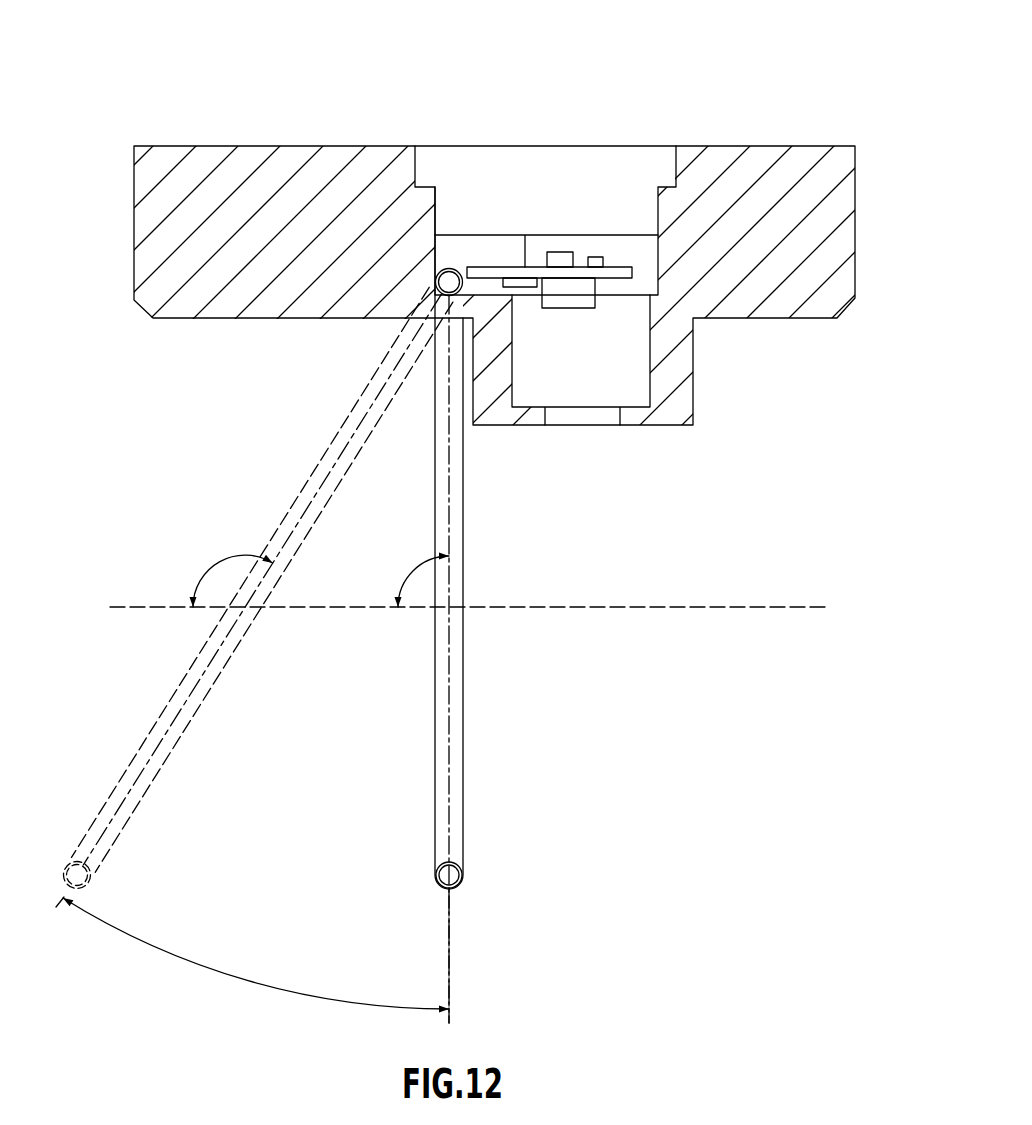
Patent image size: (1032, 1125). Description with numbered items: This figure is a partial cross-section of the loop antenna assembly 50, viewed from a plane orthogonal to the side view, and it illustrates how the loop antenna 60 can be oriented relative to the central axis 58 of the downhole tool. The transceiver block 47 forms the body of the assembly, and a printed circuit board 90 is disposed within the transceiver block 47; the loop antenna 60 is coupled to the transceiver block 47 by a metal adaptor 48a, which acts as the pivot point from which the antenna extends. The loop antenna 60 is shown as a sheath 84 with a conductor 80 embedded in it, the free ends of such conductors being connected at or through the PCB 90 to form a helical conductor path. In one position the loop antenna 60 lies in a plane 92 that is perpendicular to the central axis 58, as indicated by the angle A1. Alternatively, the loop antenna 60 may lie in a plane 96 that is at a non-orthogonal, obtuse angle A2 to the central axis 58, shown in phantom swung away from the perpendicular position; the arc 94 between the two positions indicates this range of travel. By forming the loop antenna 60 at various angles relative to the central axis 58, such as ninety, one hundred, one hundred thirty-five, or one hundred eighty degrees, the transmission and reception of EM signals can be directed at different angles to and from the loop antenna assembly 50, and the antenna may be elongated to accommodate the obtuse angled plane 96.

The loop antenna assembly 50 is at (502, 514).
The transceiver block 47 is at (762, 147).
The metal adaptor 48a is at (436, 276).
The printed circuit board 90 is at (583, 282).
The loop antenna 60 is at (301, 605).
The central axis 58 is at (713, 607).
The angle A1 is at (405, 578).
The obtuse angle A2 is at (203, 562).
The sheath 84 is at (463, 870).
The conductor 80 is at (460, 875).
The plane 92 is at (450, 923).
The plane 96 is at (62, 912).
The arc of travel 94 is at (217, 972).